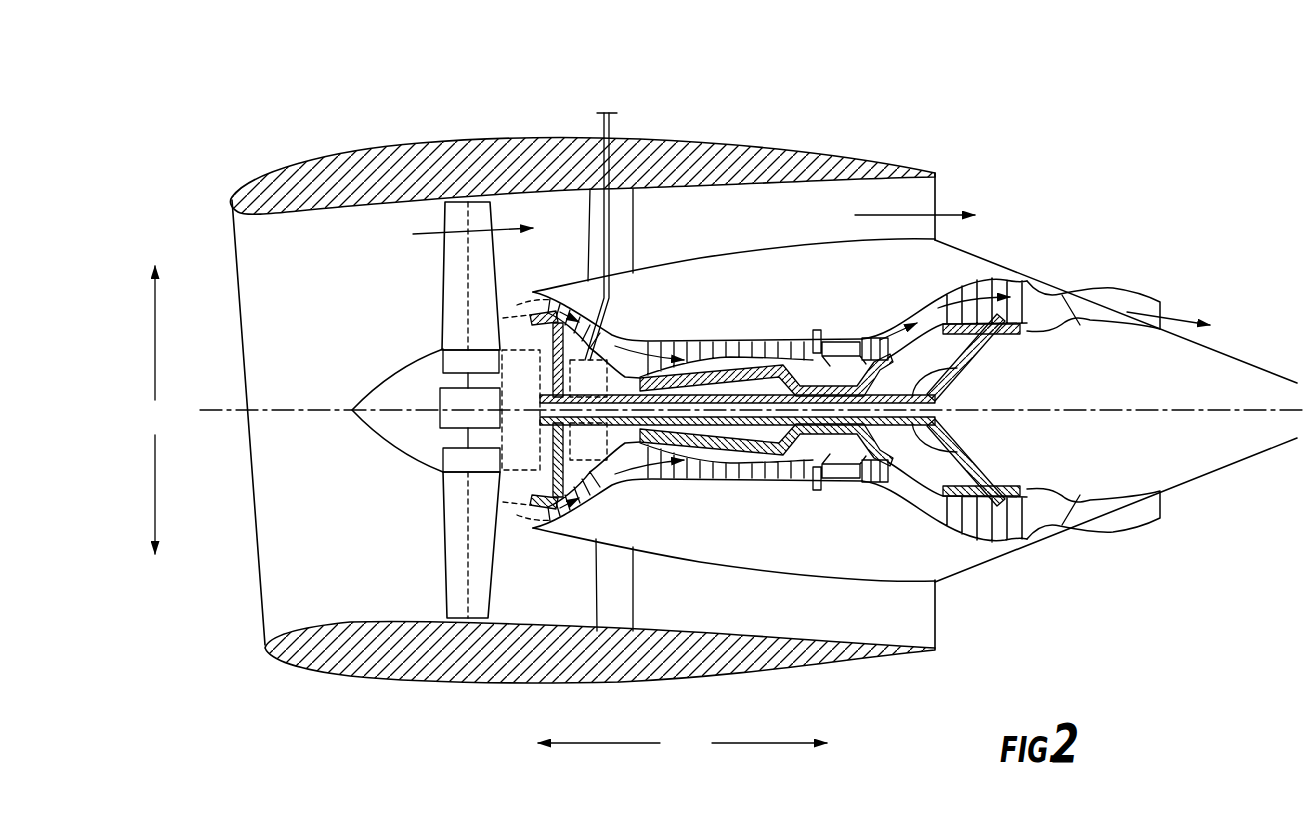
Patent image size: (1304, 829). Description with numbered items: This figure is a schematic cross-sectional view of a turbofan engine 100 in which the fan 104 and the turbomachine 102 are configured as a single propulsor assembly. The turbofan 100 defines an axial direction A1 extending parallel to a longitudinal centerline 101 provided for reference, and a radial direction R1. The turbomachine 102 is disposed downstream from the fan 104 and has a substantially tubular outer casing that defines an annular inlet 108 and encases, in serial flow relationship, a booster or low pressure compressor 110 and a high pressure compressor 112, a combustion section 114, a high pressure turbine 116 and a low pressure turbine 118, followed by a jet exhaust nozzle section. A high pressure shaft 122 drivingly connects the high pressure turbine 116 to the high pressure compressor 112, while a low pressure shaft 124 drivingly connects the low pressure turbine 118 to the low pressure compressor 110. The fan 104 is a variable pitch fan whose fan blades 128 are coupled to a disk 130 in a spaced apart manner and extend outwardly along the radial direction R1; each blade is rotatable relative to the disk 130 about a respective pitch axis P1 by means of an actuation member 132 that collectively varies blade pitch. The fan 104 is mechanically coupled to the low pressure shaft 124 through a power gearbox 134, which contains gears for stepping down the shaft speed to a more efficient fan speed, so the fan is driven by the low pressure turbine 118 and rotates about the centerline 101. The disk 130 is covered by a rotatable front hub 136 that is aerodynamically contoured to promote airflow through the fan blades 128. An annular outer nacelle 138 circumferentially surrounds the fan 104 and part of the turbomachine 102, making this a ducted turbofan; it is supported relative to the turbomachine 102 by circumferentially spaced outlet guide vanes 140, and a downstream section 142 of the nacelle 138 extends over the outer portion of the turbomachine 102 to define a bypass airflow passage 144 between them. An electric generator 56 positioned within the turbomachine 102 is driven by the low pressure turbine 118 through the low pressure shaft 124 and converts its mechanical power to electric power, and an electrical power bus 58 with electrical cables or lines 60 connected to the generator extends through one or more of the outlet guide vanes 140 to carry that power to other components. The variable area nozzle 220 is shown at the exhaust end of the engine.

The turbofan engine 100 is at (1035, 158).
The longitudinal centerline 101 is at (1103, 410).
The turbomachine 102 is at (752, 238).
The fan 104 is at (352, 232).
The annular inlet 108 is at (533, 513).
The low pressure compressor 110 is at (568, 523).
The high pressure compressor 112 is at (663, 466).
The combustion section 114 is at (833, 470).
The high pressure turbine 116 is at (900, 479).
The low pressure turbine 118 is at (1018, 538).
The high pressure shaft 122 is at (838, 380).
The low pressure shaft 124 is at (988, 368).
The fan blades 128 is at (440, 553).
The disk 130 is at (460, 363).
The actuation member 132 is at (440, 398).
The power gearbox 134 is at (507, 347).
The rotatable front hub 136 is at (365, 428).
The outer nacelle 138 is at (487, 688).
The outlet guide vanes 140 is at (633, 222).
The downstream section of the nacelle 142 is at (866, 158).
The bypass airflow passage 144 is at (783, 232).
The jet exhaust nozzle section 220 is at (1078, 518).
The electric generator 56 is at (597, 448).
The electrical power bus 58 is at (590, 122).
The electrical cables or lines 60 is at (612, 126).
The pitch axis P1 is at (465, 213).
The radial direction R1 is at (159, 410).
The axial direction A1 is at (682, 741).